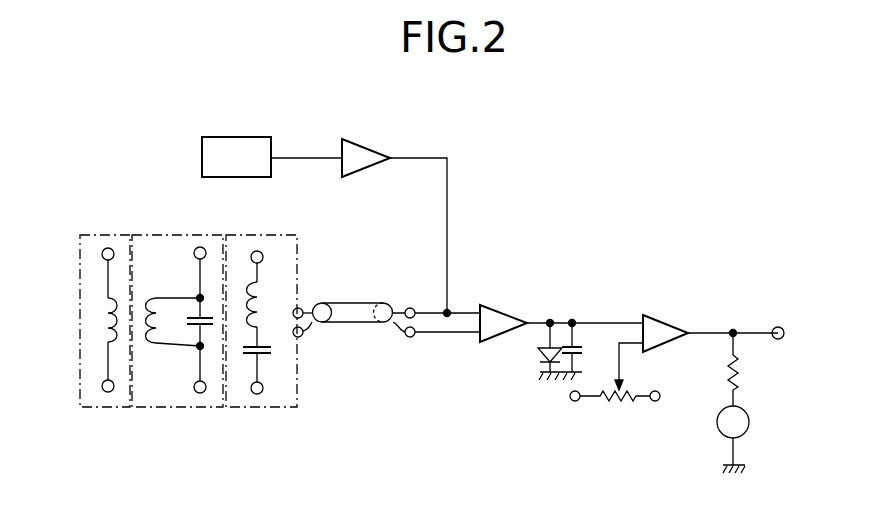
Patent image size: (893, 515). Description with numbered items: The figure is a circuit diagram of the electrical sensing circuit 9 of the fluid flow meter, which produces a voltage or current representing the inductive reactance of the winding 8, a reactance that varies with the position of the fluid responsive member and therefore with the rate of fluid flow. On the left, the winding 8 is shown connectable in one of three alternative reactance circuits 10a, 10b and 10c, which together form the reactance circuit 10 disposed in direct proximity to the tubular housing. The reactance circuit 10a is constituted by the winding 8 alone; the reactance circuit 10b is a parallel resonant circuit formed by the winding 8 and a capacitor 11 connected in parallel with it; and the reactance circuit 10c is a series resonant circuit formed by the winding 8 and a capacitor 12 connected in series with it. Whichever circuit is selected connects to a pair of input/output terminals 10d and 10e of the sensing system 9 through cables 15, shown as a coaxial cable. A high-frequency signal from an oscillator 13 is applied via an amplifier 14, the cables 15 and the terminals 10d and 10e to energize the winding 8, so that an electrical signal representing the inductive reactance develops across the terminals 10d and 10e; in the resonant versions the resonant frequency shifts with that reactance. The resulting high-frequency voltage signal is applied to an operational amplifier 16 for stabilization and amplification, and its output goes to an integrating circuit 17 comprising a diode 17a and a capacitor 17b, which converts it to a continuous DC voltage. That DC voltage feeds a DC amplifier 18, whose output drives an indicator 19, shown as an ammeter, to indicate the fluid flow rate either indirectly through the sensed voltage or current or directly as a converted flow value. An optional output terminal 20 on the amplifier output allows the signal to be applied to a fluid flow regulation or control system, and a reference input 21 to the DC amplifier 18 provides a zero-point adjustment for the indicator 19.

The winding 8 is at (100, 322).
The electrical sensing circuit 9 is at (537, 202).
The reactance circuit 10 is at (188, 325).
The reactance circuit 10a is at (110, 234).
The reactance circuit 10b is at (189, 234).
The reactance circuit 10c is at (272, 234).
The input/output terminal 10d is at (302, 308).
The input/output terminal 10e is at (302, 337).
The capacitor 11 is at (184, 347).
The capacitor 12 is at (270, 355).
The oscillator 13 is at (246, 137).
The amplifier 14 is at (373, 148).
The cables 15 is at (370, 303).
The operational amplifier 16 is at (498, 308).
The integrating circuit 17 is at (559, 329).
The diode 17a is at (543, 362).
The capacitor 17b is at (585, 350).
The DC amplifier 18 is at (671, 322).
The indicator 19 is at (749, 422).
The output terminal 20 is at (778, 327).
The reference input 21 is at (622, 405).